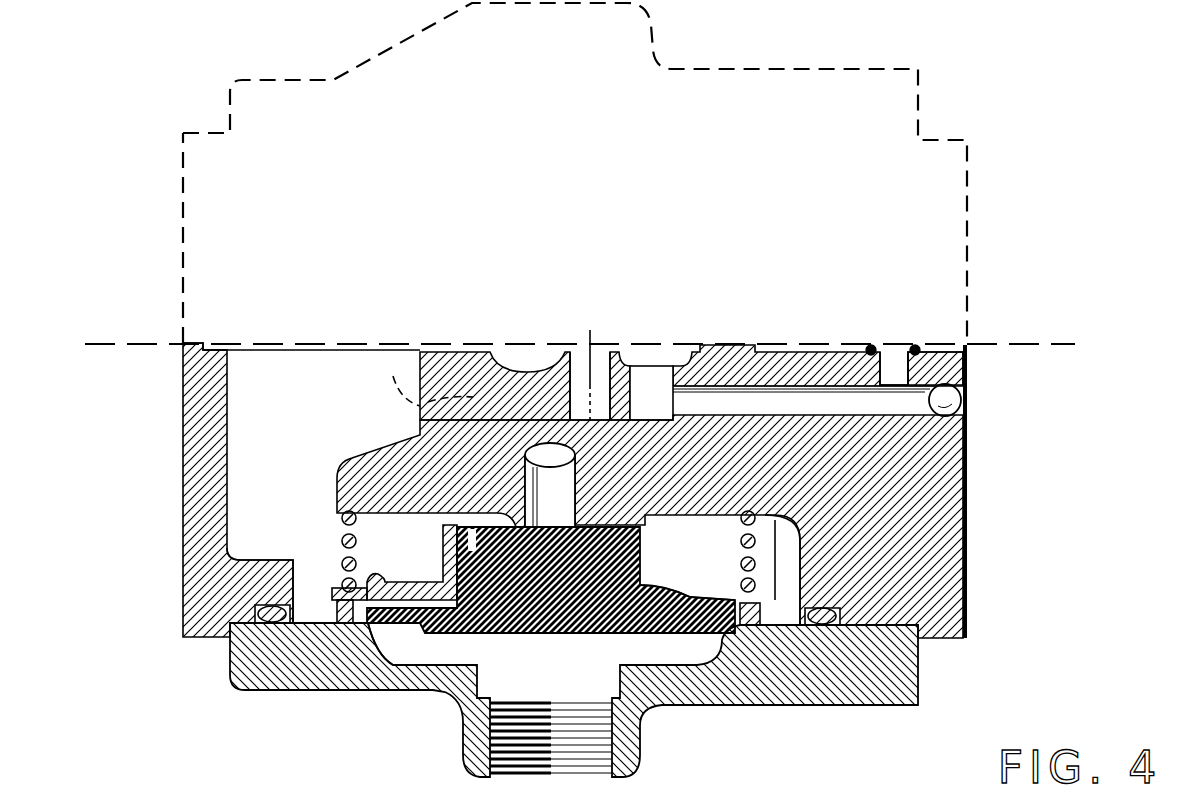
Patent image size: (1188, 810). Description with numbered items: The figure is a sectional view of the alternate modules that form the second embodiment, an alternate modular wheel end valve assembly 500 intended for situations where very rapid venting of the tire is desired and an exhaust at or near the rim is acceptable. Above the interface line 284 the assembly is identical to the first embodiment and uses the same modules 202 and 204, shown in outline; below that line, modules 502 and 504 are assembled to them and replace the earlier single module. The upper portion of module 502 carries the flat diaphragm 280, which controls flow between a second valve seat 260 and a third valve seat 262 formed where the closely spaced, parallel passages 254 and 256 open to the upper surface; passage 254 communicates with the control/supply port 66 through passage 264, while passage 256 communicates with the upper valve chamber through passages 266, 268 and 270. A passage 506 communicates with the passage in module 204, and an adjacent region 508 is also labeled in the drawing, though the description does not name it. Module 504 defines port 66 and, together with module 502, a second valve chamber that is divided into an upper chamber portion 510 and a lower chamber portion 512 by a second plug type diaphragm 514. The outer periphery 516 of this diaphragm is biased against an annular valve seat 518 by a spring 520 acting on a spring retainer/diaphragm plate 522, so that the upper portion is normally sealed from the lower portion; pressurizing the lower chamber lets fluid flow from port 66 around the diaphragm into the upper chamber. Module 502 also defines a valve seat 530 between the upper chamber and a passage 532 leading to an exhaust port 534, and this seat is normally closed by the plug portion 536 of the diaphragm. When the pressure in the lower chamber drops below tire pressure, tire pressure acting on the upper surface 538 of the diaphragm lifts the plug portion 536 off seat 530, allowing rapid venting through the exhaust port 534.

The module 202 is at (203, 105).
The module 204 is at (166, 188).
The alternate modular wheel end valve assembly 500 is at (1060, 118).
The interface line 284 is at (1058, 344).
The module 502 is at (162, 452).
The module 504 is at (286, 750).
The passage 506 is at (235, 365).
The chamber 508 is at (238, 405).
The upper chamber portion 510 is at (245, 480).
The lower chamber portion 512 is at (393, 638).
The plug type diaphragm 514 is at (420, 613).
The outer periphery 516 is at (348, 613).
The annular valve seat 518 is at (745, 628).
The spring 520 is at (770, 538).
The spring retainer/diaphragm plate 522 is at (800, 592).
The second valve seat 530 is at (578, 518).
The passage 532 is at (455, 562).
The exhaust port 534 is at (525, 455).
The plug portion 536 is at (540, 603).
The upper surface 538 is at (688, 618).
The passage 254 is at (580, 385).
The passage 256 is at (634, 395).
The second valve seat 260 is at (608, 378).
The third valve seat 262 is at (660, 357).
The passage 264 is at (418, 400).
The passage 266 is at (807, 393).
The passage 268 is at (905, 371).
The passage 270 is at (898, 352).
The flat diaphragm 280 is at (452, 348).
The control/supply port 66 is at (598, 752).